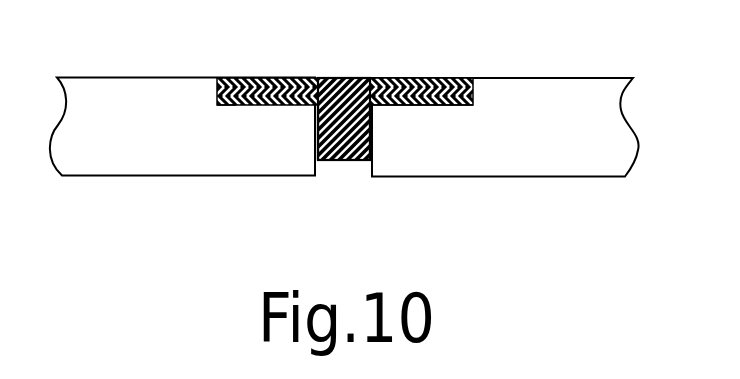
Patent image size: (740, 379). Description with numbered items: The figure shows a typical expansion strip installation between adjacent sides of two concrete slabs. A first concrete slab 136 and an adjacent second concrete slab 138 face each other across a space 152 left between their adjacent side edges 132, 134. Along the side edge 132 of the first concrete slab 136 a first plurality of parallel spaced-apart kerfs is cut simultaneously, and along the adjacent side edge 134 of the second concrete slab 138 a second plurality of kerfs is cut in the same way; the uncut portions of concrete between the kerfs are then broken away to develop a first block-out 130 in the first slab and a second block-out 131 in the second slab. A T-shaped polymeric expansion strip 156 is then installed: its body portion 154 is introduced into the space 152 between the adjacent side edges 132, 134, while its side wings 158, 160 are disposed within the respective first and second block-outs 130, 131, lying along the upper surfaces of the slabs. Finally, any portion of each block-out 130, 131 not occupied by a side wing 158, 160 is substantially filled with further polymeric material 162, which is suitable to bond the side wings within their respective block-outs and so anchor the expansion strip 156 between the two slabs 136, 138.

The first block-out 130 is at (236, 107).
The second block-out 131 is at (447, 106).
The side edge of first concrete slab 132 is at (338, 162).
The side edge of second concrete slab 134 is at (369, 162).
The first concrete slab 136 is at (138, 88).
The second concrete slab 138 is at (537, 88).
The space 152 is at (358, 162).
The body portion 154 is at (315, 162).
The T-shaped polymeric expansion strip 156 is at (350, 161).
The first side wing 158 is at (279, 77).
The second side wing 160 is at (410, 77).
The further polymeric material 162 is at (392, 77).